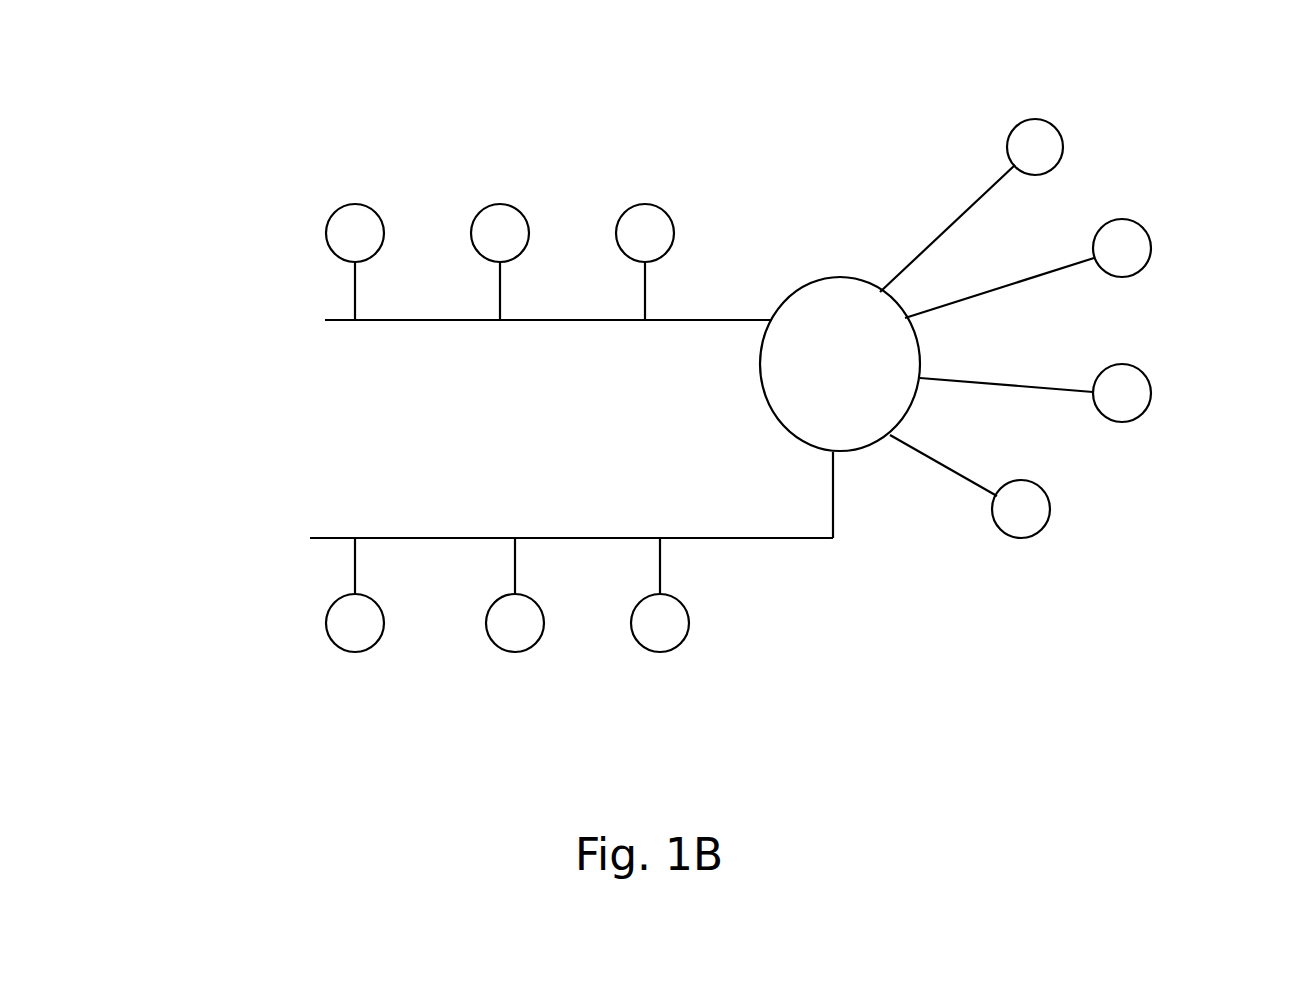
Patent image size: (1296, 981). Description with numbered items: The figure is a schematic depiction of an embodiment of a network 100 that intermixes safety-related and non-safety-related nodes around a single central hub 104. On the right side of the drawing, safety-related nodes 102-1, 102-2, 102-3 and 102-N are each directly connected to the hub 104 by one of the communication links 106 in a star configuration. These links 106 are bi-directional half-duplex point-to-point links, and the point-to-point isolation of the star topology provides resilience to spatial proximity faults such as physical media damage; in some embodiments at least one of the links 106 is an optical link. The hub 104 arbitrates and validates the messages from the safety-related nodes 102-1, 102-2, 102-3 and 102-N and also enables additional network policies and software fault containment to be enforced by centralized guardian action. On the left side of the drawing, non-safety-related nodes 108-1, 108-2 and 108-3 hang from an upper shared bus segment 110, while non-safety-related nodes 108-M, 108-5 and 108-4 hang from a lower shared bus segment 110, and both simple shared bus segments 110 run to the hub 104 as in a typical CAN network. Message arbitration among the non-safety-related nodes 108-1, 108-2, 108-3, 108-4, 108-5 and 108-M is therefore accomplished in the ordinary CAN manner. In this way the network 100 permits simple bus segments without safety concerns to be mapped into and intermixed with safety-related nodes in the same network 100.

The network 100 is at (140, 179).
The safety-related node 102-1 is at (1091, 110).
The safety-related node 102-2 is at (1179, 211).
The safety-related node 102-3 is at (1191, 377).
The safety-related node 102-N is at (1094, 542).
The hub 104 is at (785, 407).
The communication link 106 is at (966, 352).
The non-safety-related node 108-1 is at (314, 218).
The non-safety-related node 108-2 is at (474, 218).
The non-safety-related node 108-3 is at (681, 218).
The non-safety-related node 108-4 is at (695, 641).
The non-safety-related node 108-5 is at (544, 641).
The non-safety-related node 108-M is at (389, 641).
The shared bus segment 110 is at (571, 429).